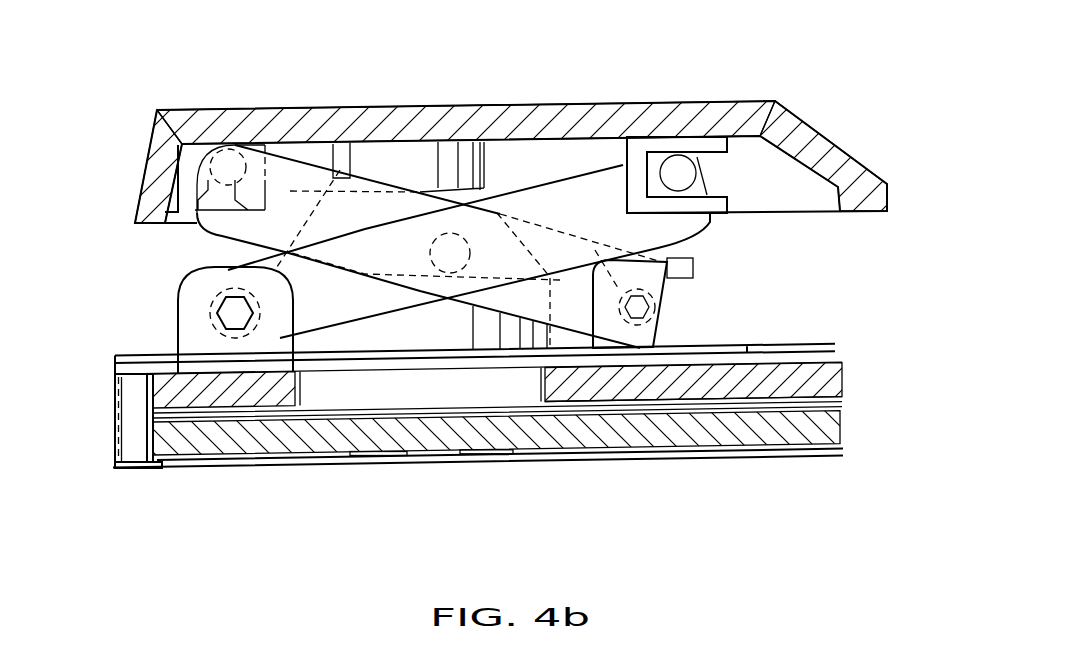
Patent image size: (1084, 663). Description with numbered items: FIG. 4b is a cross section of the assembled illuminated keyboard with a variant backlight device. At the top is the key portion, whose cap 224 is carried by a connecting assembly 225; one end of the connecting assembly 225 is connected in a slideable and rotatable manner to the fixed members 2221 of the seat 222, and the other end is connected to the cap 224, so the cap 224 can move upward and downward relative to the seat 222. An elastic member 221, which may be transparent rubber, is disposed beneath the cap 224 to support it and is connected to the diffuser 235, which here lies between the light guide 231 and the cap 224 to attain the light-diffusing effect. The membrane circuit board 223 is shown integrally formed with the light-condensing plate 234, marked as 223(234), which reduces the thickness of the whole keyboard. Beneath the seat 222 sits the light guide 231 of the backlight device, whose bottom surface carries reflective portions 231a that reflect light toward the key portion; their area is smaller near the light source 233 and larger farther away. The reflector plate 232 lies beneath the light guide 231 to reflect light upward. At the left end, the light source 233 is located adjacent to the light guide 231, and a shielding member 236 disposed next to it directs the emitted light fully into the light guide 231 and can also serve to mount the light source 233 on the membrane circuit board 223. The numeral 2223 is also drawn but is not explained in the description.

The elastic member 221 is at (383, 108).
The seat 222 is at (818, 387).
The fixed member 2221 is at (688, 290).
The pivot pins 2223 is at (417, 398).
The membrane circuit board 223 is at (828, 354).
The cap 224 is at (688, 105).
The connecting assembly 225 is at (590, 193).
The light guide 231 is at (823, 437).
The reflective portion 231a is at (500, 454).
The reflector plate 232 is at (800, 448).
The light source 233 is at (133, 448).
The light-condensing plate 234 is at (663, 402).
The diffuser 235 is at (787, 345).
The shielding member 236 is at (114, 432).